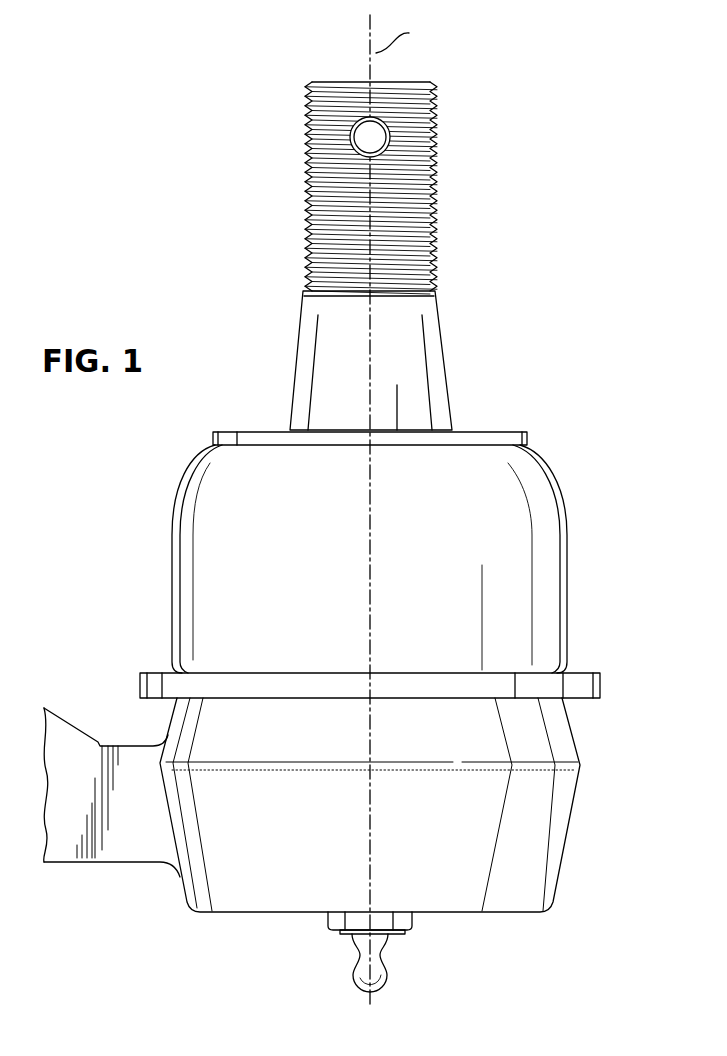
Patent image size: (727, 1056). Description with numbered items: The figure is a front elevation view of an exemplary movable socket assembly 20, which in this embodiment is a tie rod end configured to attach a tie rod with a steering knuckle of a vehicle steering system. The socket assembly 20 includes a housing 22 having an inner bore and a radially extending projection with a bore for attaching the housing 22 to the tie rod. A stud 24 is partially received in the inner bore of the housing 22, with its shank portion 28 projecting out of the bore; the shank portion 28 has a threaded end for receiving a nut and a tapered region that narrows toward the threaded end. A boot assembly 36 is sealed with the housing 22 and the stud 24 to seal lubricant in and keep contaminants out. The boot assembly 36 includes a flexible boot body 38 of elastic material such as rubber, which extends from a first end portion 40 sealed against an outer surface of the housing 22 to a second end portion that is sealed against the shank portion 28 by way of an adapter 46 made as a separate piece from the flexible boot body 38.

The socket assembly 20 is at (506, 366).
The housing 22 is at (588, 830).
The stud 24 is at (440, 326).
The shank portion 28 is at (323, 352).
The boot assembly 36 is at (562, 493).
The flexible boot body 38 is at (538, 576).
The first end portion 40 is at (602, 684).
The adapter 46 is at (242, 430).